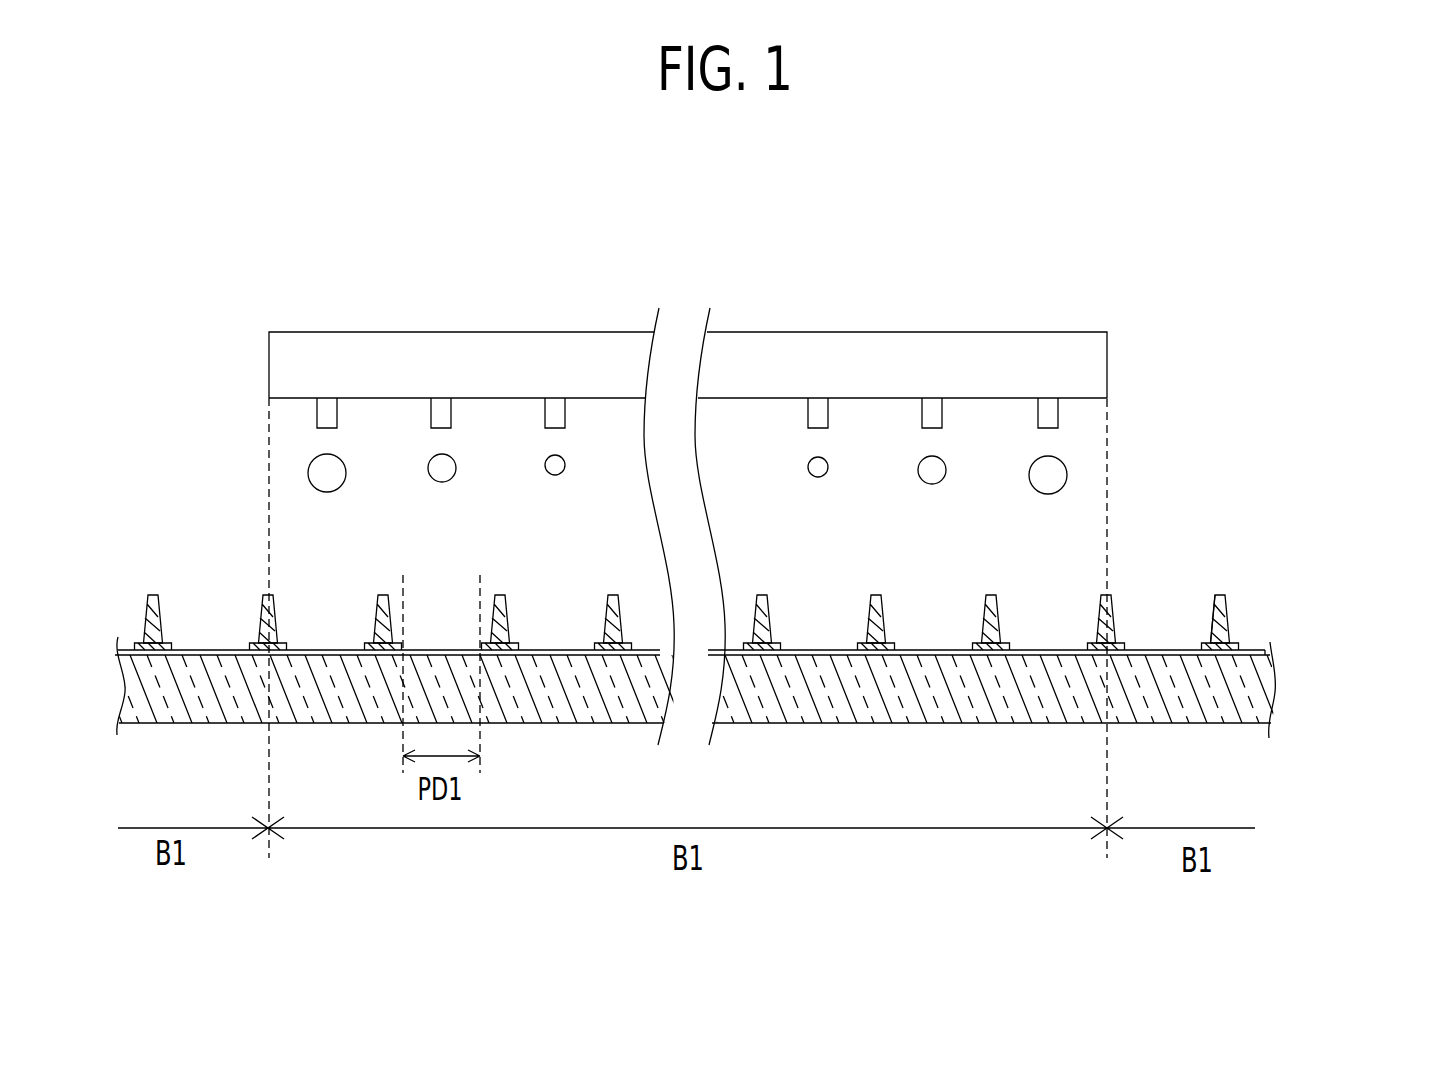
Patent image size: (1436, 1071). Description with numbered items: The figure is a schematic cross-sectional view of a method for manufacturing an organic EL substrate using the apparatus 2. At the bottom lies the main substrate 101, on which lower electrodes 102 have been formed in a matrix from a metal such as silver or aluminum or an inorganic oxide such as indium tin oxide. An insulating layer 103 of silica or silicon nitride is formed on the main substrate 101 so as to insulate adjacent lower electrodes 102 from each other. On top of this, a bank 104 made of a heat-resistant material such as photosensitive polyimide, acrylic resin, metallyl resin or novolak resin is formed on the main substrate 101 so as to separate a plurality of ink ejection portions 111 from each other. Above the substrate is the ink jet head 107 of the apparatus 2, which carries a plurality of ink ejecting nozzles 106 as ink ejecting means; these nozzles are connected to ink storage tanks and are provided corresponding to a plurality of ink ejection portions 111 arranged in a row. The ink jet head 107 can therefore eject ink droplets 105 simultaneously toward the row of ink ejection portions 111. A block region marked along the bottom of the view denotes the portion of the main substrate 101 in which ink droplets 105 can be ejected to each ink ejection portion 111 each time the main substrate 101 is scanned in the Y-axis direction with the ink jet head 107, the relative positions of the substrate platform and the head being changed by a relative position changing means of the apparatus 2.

The apparatus 2 is at (763, 346).
The main substrate 101 is at (1247, 690).
The lower electrodes 102 is at (1252, 651).
The insulating layer 103 is at (1242, 645).
The bank 104 is at (1233, 587).
The ink droplets 105 is at (1067, 476).
The ink ejecting nozzles 106 is at (1058, 414).
The ink jet head 107 is at (1107, 366).
The ink ejection portions 111 is at (1212, 621).